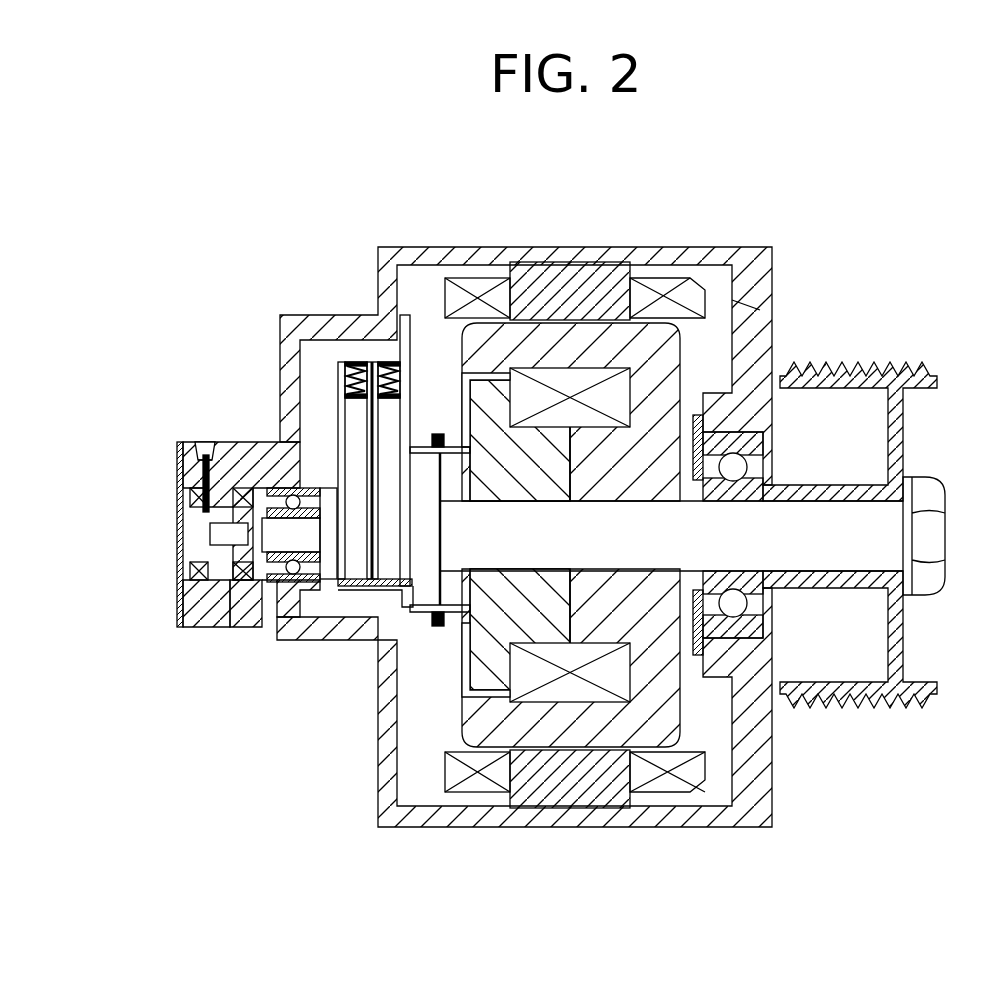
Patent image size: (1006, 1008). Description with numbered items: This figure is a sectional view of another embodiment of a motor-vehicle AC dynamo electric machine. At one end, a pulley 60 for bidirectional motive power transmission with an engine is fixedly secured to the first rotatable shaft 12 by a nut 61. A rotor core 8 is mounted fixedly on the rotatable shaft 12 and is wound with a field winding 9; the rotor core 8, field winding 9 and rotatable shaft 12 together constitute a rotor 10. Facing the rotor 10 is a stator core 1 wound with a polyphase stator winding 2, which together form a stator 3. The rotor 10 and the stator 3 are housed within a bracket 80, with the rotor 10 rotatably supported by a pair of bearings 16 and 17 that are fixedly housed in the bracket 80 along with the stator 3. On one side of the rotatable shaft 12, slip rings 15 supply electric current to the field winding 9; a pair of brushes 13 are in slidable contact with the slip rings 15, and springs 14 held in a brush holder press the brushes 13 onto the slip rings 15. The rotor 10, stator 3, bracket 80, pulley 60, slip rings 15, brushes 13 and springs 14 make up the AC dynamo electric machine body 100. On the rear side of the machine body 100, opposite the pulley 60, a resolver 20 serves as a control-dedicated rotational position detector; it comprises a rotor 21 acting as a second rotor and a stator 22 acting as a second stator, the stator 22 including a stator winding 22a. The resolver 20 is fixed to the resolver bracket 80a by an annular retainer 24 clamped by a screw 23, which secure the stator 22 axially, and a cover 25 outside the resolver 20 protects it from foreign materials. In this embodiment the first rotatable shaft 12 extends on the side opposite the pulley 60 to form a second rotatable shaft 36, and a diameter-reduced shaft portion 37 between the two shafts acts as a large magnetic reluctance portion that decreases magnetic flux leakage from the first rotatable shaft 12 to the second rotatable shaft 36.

The AC dynamo electric machine body 100 is at (460, 247).
The bracket 80 is at (553, 247).
The resolver bracket 80a is at (200, 620).
The stator 3 is at (575, 477).
The stator core 1 is at (595, 262).
The polyphase stator winding 2 is at (610, 192).
The rotor core 8 is at (735, 303).
The field winding 9 is at (668, 356).
The rotor 10 is at (806, 262).
The rotatable shaft 12 is at (863, 533).
The brushes 13 is at (378, 440).
The springs 14 is at (385, 362).
The slip rings 15 is at (392, 555).
The bearing 16 is at (760, 464).
The bearing 17 is at (283, 615).
The resolver 20 is at (199, 540).
The rotor 21 is at (215, 538).
The stator 22 is at (230, 510).
The stator winding 22a is at (190, 480).
The screw 23 is at (193, 450).
The retainer 24 is at (207, 458).
The cover 25 is at (178, 622).
The second rotatable shaft 36 is at (245, 545).
The diameter-reduced shaft portion 37 is at (240, 600).
The pulley 60 is at (935, 365).
The nut 61 is at (935, 540).